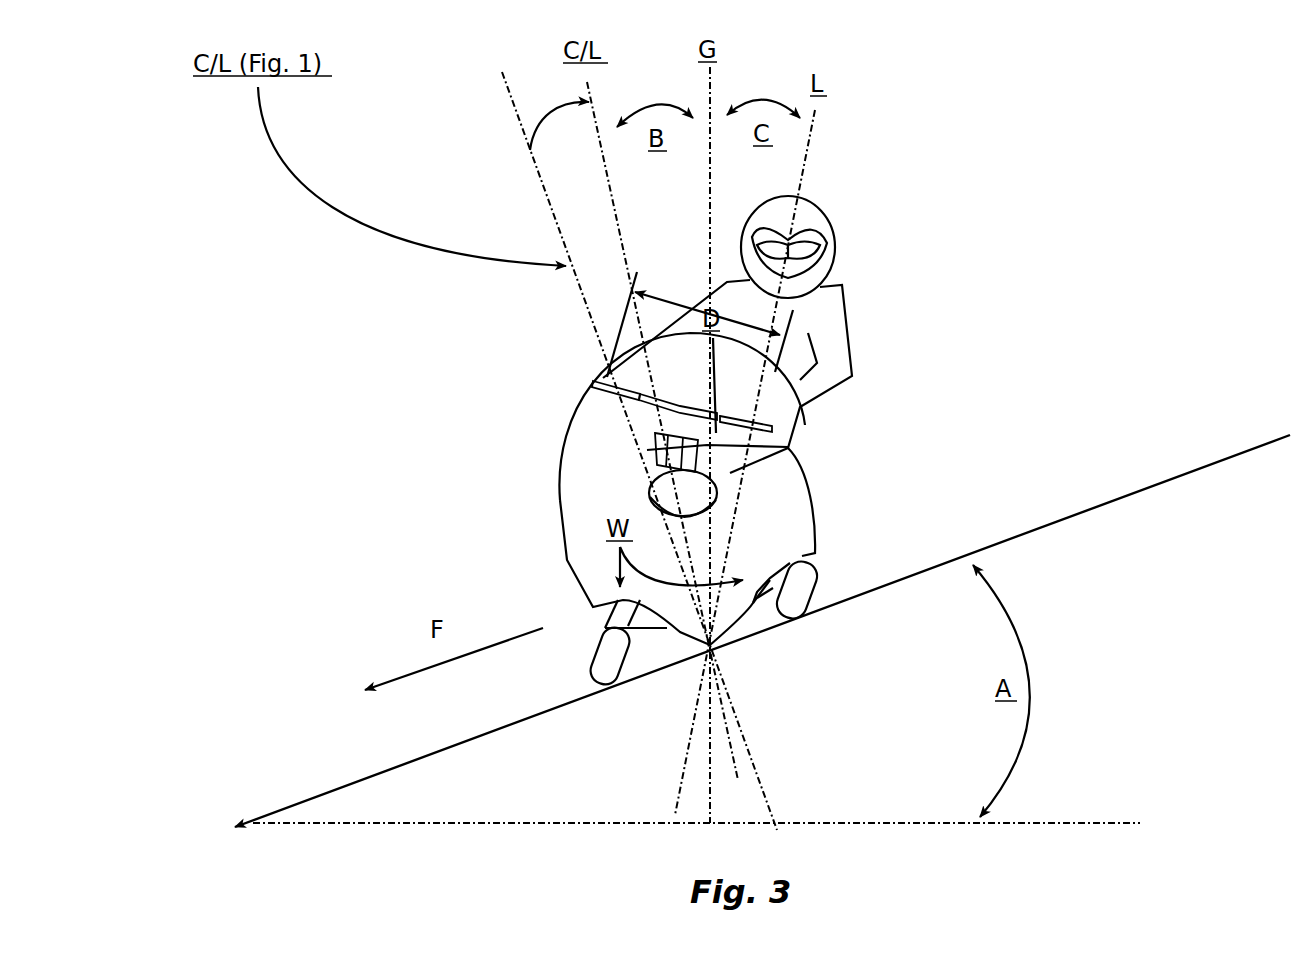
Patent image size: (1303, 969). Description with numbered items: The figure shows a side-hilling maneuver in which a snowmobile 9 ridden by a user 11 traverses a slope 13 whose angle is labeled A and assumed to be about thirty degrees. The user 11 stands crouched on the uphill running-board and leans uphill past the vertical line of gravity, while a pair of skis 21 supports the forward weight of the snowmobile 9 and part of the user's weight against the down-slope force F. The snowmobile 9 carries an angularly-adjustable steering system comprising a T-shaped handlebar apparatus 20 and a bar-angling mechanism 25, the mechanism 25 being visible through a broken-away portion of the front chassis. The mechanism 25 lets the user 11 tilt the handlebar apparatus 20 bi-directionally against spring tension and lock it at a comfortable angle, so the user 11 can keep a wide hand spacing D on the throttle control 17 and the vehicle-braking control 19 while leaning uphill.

The snowmobile 9 is at (605, 480).
The user 11 is at (878, 318).
The slope 13 is at (1162, 478).
The throttle control 17 is at (607, 377).
The vehicle-braking control 19 is at (763, 430).
The handlebar apparatus 20 is at (630, 412).
The skis 21 is at (815, 585).
The bar-angling mechanism 25 is at (647, 450).